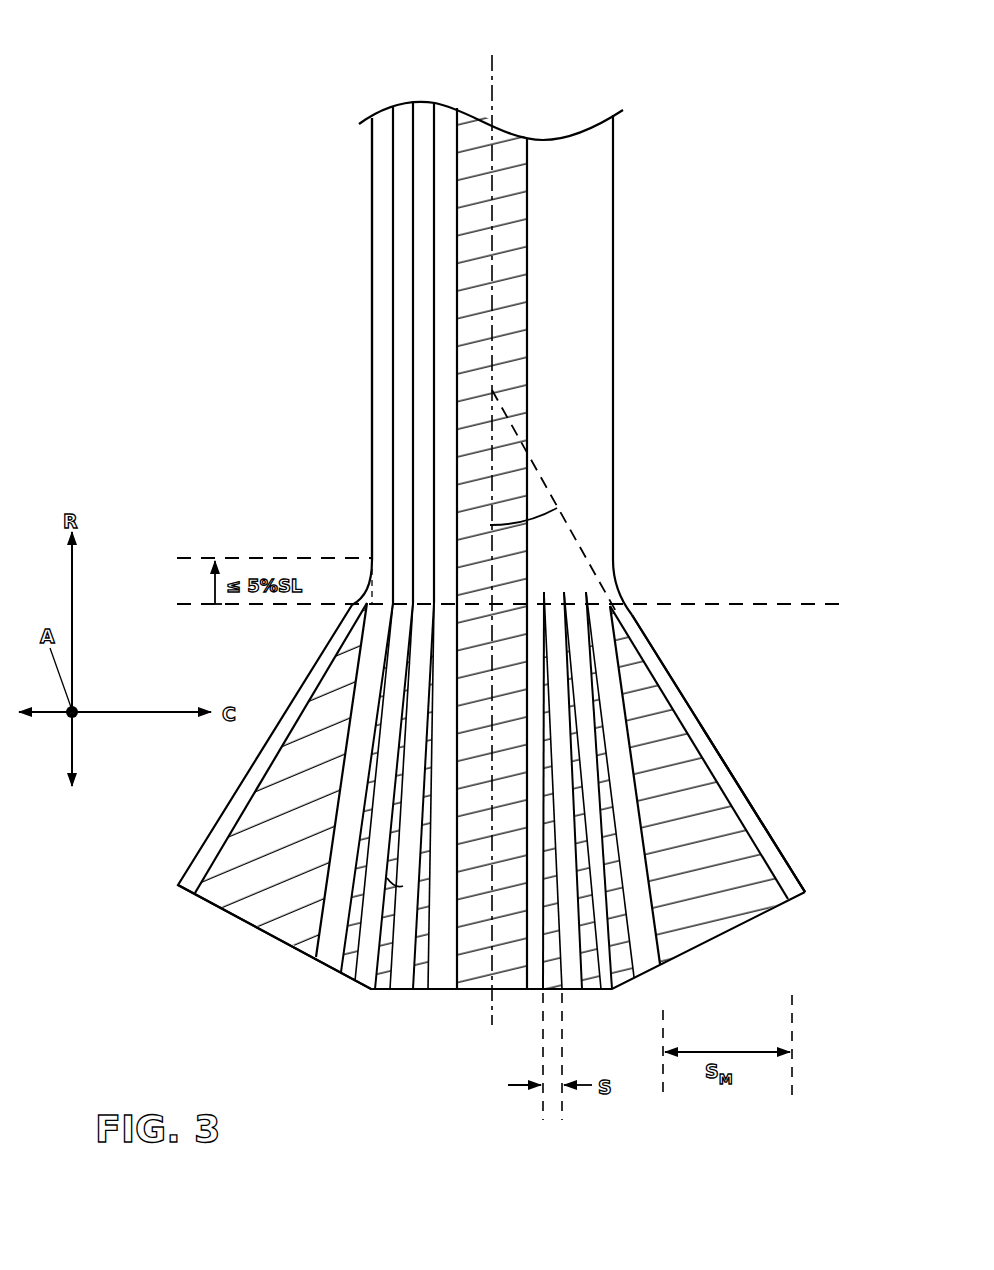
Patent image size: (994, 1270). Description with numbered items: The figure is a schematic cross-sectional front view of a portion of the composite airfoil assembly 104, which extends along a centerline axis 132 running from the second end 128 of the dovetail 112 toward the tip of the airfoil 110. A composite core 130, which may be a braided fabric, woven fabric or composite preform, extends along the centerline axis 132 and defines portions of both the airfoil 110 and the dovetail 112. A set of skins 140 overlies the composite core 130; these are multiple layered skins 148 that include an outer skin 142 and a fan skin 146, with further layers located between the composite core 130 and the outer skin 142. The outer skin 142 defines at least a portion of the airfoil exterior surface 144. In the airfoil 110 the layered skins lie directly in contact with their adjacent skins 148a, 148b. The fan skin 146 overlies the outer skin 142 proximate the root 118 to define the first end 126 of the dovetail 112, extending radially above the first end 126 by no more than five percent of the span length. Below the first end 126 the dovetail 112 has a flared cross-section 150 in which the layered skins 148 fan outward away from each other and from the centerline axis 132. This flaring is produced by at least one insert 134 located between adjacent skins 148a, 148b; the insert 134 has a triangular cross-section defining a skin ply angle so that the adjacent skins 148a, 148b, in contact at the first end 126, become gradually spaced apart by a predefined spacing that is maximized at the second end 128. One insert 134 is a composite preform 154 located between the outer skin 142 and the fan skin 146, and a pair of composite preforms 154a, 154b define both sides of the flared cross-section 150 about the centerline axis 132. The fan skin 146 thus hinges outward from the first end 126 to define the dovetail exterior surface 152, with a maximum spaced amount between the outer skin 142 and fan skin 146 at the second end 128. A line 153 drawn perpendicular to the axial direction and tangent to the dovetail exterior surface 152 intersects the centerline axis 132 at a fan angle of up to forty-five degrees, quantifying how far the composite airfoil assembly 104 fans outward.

The composite airfoil assembly 104 is at (161, 31).
The airfoil 110 is at (616, 173).
The dovetail 112 is at (792, 854).
The root 118 is at (622, 595).
The first end 126 is at (336, 606).
The second end 128 is at (362, 996).
The composite core 130 is at (505, 362).
The centerline axis 132 is at (492, 57).
The insert 134 is at (350, 922).
The set of skins 140 is at (585, 268).
The outer skin 142 is at (385, 215).
The airfoil exterior surface 144 is at (370, 318).
The fan skin 146 is at (712, 768).
The multiple layered skins 148 is at (425, 172).
The adjacent skin 148a is at (408, 966).
The adjacent skin 148b is at (443, 966).
The flared cross-section 150 is at (712, 688).
The dovetail exterior surface 152 is at (772, 813).
The line 153 is at (613, 522).
The composite preform 154 is at (268, 876).
The composite preform 154a is at (281, 780).
The composite preform 154b is at (693, 915).